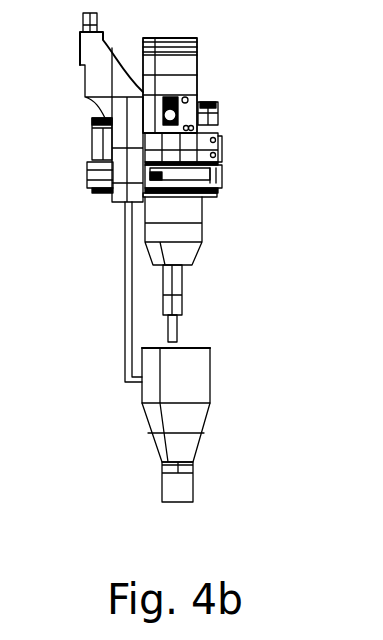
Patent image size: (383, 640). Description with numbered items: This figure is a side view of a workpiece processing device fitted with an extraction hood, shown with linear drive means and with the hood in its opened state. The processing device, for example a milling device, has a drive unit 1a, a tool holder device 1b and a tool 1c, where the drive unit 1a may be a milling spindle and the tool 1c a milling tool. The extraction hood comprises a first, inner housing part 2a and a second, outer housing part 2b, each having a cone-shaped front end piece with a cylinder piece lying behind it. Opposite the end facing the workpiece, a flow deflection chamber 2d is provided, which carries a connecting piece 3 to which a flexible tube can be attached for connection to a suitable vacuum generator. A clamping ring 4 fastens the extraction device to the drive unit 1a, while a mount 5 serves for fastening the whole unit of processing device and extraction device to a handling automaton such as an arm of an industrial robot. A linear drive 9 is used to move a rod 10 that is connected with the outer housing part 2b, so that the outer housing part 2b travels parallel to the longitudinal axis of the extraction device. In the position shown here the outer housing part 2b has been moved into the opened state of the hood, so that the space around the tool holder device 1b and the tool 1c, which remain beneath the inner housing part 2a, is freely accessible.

The drive unit 1a is at (197, 50).
The tool holder device 1b is at (180, 283).
The tool 1c is at (177, 320).
The inner housing part 2a is at (205, 240).
The outer housing part 2b is at (215, 405).
The flow deflection chamber 2d is at (217, 173).
The connecting piece 3 is at (97, 132).
The clamping ring 4 is at (218, 140).
The mount 5 is at (103, 61).
The linear drive 9 is at (110, 193).
The rod 10 is at (125, 262).